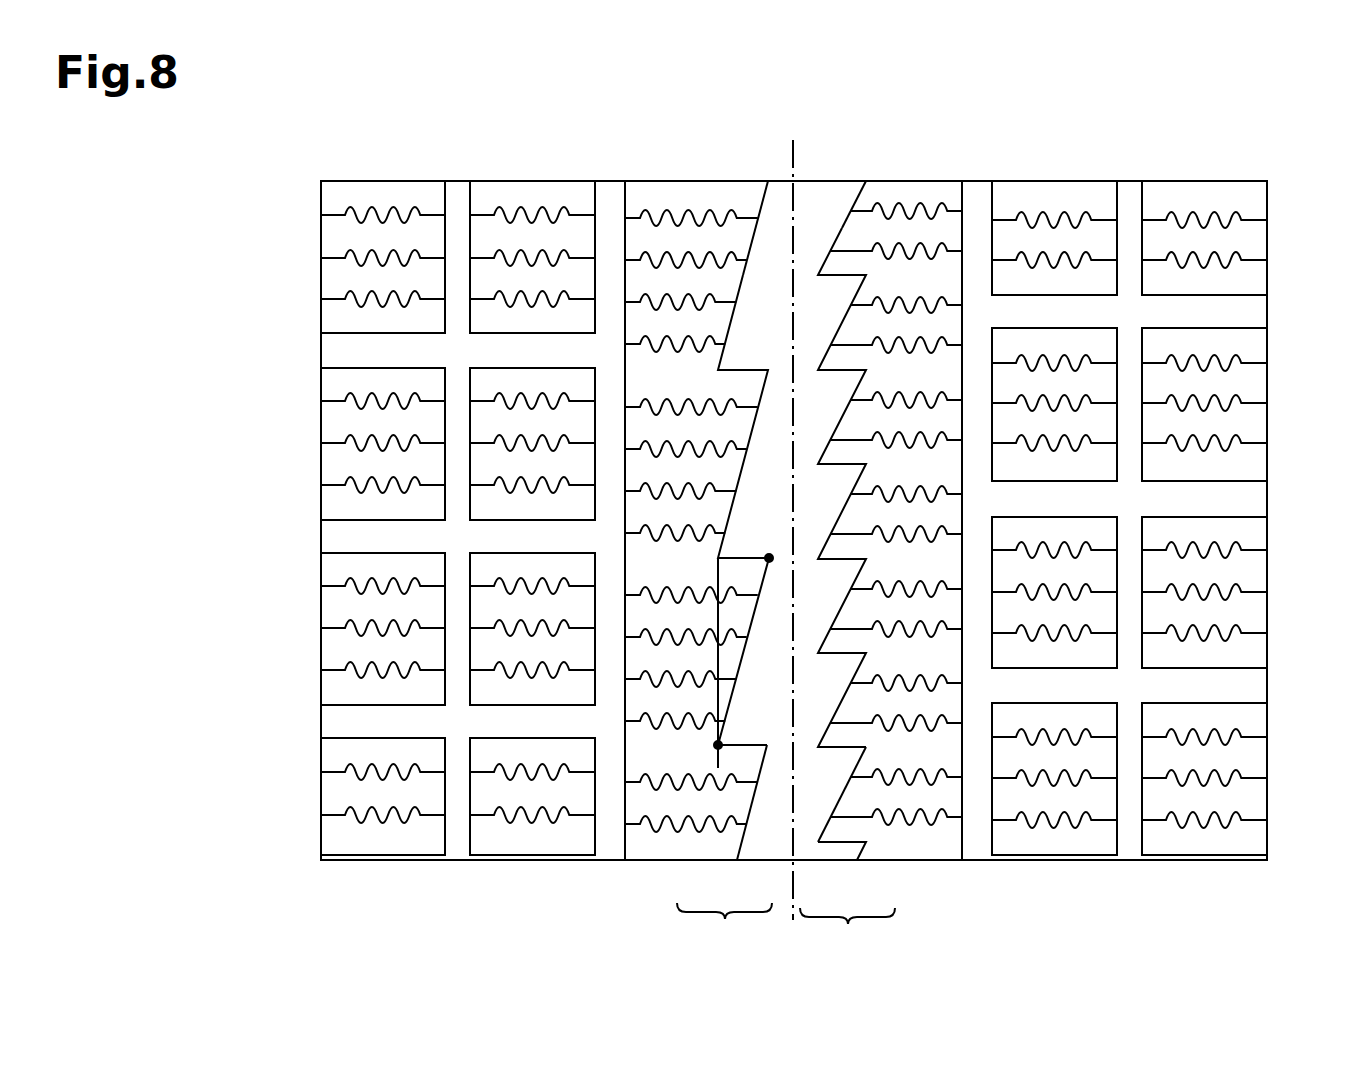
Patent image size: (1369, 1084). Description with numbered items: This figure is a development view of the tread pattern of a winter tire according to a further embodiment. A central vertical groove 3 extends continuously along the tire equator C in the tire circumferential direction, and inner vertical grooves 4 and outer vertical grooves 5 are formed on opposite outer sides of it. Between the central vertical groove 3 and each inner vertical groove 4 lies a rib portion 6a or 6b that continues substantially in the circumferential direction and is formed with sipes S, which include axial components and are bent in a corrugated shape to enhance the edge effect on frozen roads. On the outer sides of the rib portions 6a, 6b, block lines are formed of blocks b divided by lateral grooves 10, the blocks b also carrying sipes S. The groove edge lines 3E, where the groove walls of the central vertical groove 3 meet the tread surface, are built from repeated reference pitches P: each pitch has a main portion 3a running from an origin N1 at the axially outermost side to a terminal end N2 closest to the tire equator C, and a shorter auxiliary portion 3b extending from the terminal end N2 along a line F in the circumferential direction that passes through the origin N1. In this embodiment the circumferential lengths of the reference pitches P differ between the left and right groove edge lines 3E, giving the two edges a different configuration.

The lateral groove 10 is at (1233, 315).
The block b is at (376, 197).
The outer vertical groove 5 is at (460, 192).
The inner vertical groove 4 is at (613, 203).
The sipe S is at (335, 297).
The rib portion 6b is at (713, 192).
The rib portion 6a is at (920, 200).
The central vertical groove 3 is at (807, 217).
The groove edge line 3E is at (767, 207).
The main portion 3a is at (740, 690).
The auxiliary portion 3b is at (752, 748).
The reference pitch P is at (786, 929).
The tire equator C is at (797, 514).
The line in the tire circumferential direction F is at (730, 744).
The origin N1 is at (718, 745).
The terminal end N2 is at (770, 543).